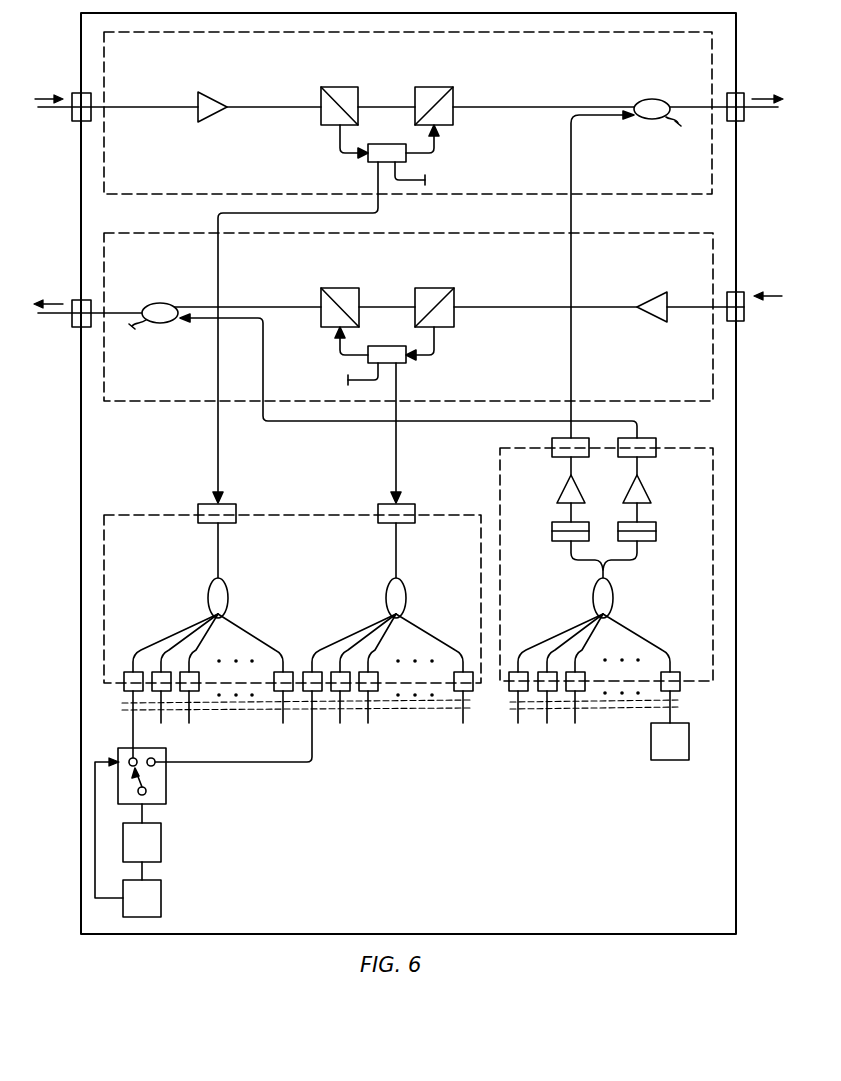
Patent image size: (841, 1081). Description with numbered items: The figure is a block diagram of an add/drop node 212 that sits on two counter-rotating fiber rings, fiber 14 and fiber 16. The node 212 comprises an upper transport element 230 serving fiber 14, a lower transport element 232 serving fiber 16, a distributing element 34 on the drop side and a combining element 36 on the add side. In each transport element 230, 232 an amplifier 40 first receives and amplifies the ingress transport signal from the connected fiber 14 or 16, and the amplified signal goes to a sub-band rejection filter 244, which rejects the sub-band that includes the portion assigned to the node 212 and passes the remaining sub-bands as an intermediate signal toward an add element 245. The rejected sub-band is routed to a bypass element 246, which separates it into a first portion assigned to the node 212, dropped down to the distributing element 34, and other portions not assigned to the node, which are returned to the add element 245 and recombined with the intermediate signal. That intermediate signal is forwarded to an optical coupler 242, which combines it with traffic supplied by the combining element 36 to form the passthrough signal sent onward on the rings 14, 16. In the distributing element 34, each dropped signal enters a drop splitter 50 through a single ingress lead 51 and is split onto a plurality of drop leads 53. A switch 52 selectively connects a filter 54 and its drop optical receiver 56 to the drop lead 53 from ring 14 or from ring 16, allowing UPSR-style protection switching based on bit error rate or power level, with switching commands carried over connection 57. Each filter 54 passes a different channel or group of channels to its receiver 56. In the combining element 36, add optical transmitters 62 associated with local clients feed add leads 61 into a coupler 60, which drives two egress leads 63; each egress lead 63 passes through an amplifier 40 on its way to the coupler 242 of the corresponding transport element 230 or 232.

The fiber 14 is at (62, 108).
The fiber 16 is at (62, 314).
The distributing element 34 is at (304, 506).
The combining element 36 is at (492, 482).
The amplifier 40 is at (214, 93).
The drop splitter 50 is at (208, 600).
The ingress lead 51 is at (217, 549).
The switch 52 is at (166, 775).
The drop lead 53 is at (472, 708).
The filter 54 is at (161, 845).
The drop optical receiver 56 is at (161, 900).
The connection 57 is at (100, 757).
The coupler 60 is at (612, 598).
The add lead 61 is at (680, 704).
The add optical transmitter 62 is at (651, 742).
The egress lead 63 is at (566, 548).
The add/drop node 212 is at (604, 940).
The transport element 230 is at (560, 79).
The transport element 232 is at (537, 284).
The optical coupler 242 is at (650, 99).
The sub-band rejection filter 244 is at (340, 87).
The add element 245 is at (434, 87).
The bypass element 246 is at (368, 163).